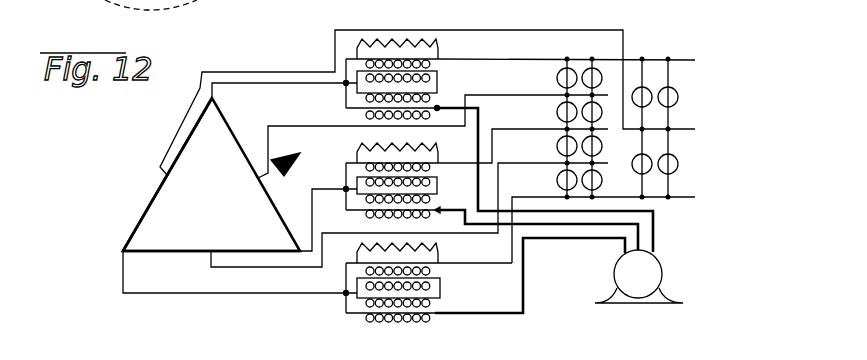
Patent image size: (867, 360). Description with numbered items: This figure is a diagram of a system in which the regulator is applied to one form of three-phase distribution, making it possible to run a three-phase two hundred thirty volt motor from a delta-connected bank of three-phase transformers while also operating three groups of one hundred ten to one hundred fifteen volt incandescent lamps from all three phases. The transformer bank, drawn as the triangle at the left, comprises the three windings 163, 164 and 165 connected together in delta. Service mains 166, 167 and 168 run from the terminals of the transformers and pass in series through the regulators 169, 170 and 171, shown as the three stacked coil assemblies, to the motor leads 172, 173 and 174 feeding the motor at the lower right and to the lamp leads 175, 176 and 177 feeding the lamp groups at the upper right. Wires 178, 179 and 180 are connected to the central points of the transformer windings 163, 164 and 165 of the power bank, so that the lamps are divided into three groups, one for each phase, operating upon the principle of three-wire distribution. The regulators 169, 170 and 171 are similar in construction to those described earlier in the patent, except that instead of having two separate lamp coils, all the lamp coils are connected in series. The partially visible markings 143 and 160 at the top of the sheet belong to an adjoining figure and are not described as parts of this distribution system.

The conductor 143 is at (271, 8).
The conductor 160 is at (95, 0).
The transformer winding 163 is at (141, 215).
The transformer winding 164 is at (243, 149).
The transformer winding 165 is at (262, 250).
The service main 166 is at (314, 88).
The service main 167 is at (339, 186).
The service main 168 is at (195, 293).
The regulator 169 is at (345, 83).
The regulator 170 is at (356, 163).
The regulator 171 is at (355, 272).
The motor lead 172 is at (656, 212).
The motor lead 173 is at (656, 239).
The motor lead 174 is at (658, 251).
The lamp lead 175 is at (556, 59).
The lamp lead 176 is at (545, 129).
The lamp lead 177 is at (546, 197).
The wire 178 is at (485, 30).
The wire 179 is at (510, 95).
The wire 180 is at (549, 163).